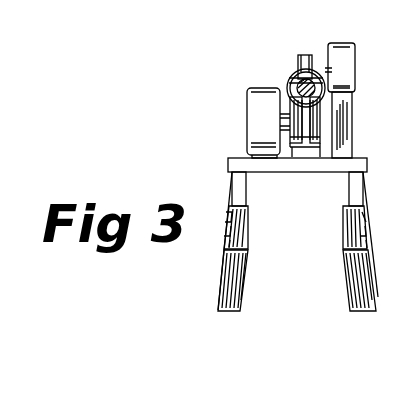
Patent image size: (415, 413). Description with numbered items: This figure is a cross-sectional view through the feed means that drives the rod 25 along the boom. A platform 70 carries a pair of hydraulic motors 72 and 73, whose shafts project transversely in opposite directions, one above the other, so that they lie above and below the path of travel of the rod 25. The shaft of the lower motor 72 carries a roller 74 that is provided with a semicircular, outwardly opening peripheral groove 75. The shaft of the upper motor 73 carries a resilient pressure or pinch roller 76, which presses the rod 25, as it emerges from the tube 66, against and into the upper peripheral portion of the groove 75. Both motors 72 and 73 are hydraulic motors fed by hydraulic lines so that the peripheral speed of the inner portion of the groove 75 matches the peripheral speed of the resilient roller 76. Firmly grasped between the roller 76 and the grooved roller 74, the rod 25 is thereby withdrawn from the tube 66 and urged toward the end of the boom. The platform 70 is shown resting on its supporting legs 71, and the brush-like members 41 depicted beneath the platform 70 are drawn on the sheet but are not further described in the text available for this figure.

The rod 25 is at (287, 83).
The brushes 41 is at (240, 280).
The tube 66 is at (293, 72).
The platform 70 is at (369, 164).
The legs 71 is at (236, 193).
The motor 72 is at (247, 109).
The motor 73 is at (355, 63).
The roller 74 is at (291, 104).
The peripheral groove 75 is at (291, 137).
The pinch roller 76 is at (303, 53).